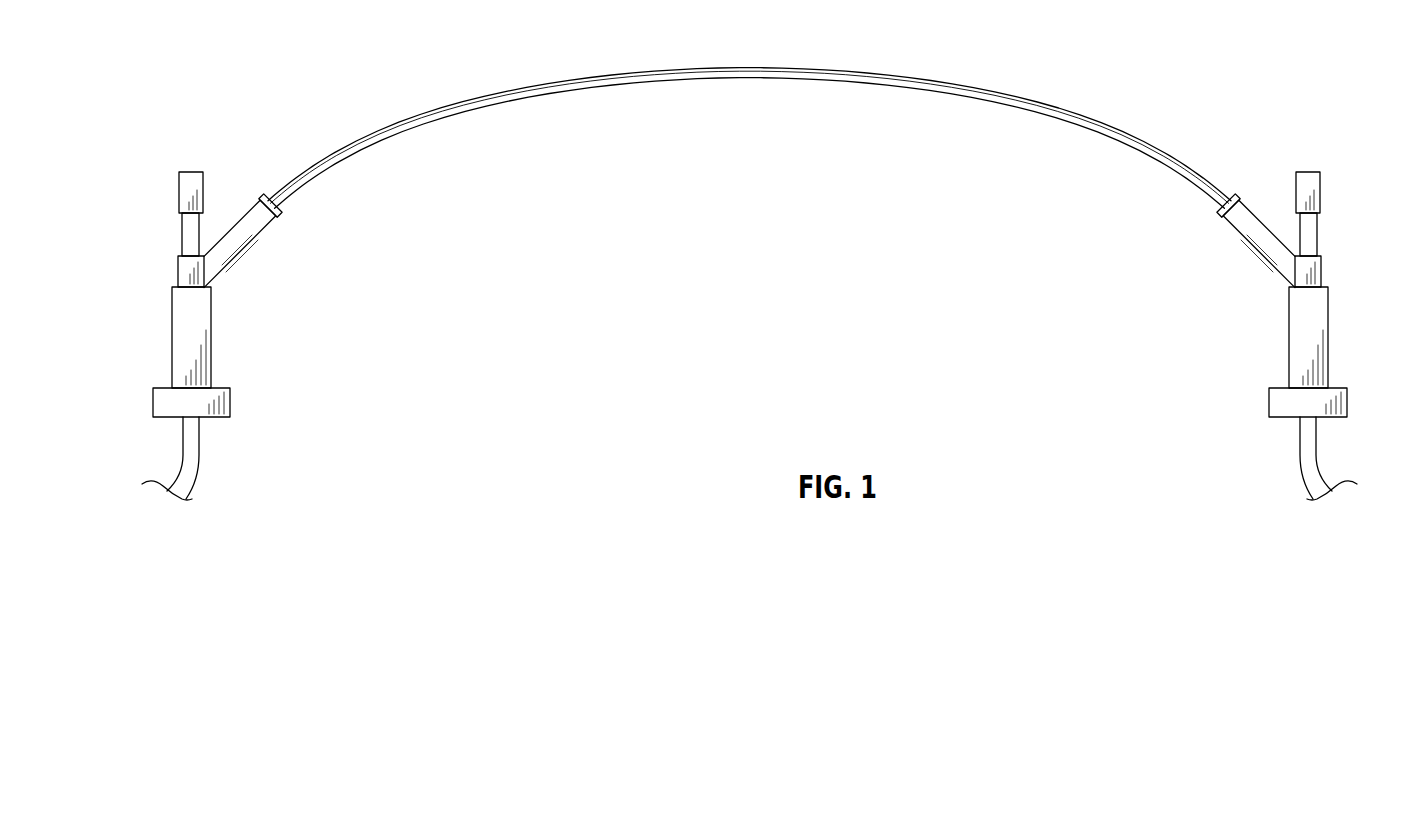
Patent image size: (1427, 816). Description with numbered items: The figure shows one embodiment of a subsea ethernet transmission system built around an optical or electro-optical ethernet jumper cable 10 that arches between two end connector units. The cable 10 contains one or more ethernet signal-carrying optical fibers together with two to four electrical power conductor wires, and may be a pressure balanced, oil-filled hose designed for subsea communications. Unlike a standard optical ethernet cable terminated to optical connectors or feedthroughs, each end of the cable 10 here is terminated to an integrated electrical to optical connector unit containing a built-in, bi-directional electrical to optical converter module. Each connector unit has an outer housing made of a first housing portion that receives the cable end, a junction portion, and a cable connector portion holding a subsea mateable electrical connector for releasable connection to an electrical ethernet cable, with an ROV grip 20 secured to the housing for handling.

The optical ethernet cable 10 is at (905, 77).
The ROV grip 20 is at (1313, 183).